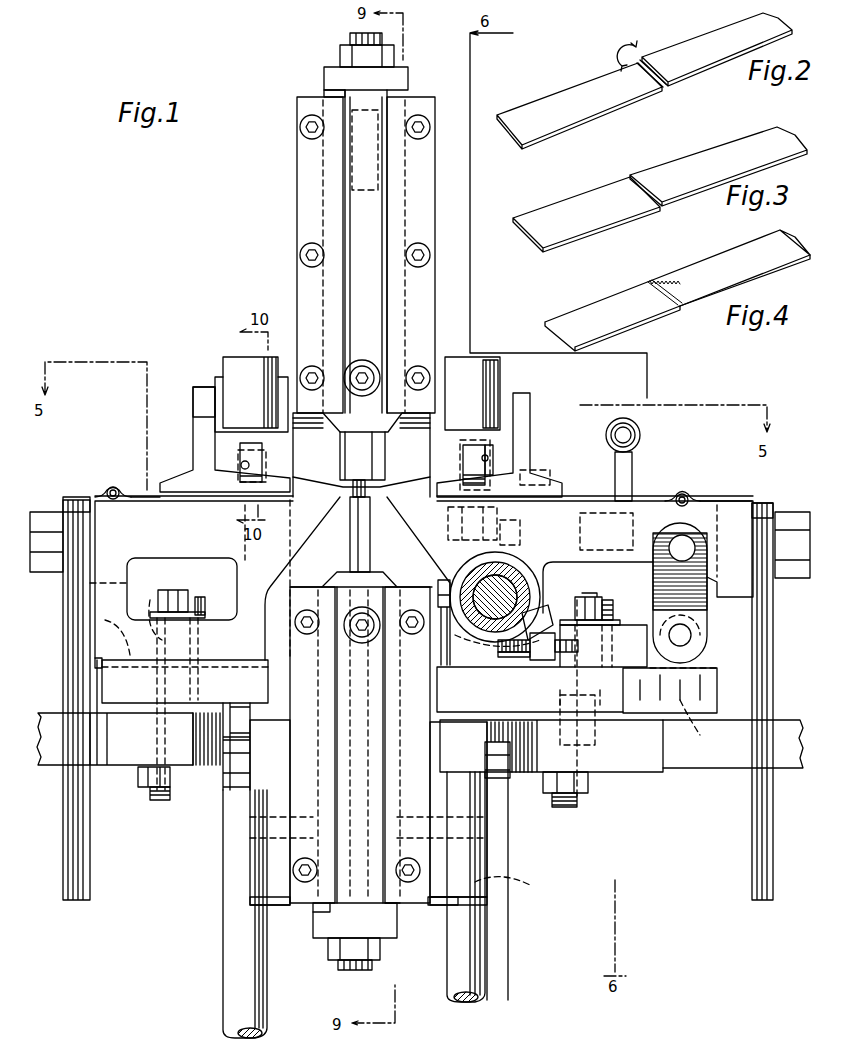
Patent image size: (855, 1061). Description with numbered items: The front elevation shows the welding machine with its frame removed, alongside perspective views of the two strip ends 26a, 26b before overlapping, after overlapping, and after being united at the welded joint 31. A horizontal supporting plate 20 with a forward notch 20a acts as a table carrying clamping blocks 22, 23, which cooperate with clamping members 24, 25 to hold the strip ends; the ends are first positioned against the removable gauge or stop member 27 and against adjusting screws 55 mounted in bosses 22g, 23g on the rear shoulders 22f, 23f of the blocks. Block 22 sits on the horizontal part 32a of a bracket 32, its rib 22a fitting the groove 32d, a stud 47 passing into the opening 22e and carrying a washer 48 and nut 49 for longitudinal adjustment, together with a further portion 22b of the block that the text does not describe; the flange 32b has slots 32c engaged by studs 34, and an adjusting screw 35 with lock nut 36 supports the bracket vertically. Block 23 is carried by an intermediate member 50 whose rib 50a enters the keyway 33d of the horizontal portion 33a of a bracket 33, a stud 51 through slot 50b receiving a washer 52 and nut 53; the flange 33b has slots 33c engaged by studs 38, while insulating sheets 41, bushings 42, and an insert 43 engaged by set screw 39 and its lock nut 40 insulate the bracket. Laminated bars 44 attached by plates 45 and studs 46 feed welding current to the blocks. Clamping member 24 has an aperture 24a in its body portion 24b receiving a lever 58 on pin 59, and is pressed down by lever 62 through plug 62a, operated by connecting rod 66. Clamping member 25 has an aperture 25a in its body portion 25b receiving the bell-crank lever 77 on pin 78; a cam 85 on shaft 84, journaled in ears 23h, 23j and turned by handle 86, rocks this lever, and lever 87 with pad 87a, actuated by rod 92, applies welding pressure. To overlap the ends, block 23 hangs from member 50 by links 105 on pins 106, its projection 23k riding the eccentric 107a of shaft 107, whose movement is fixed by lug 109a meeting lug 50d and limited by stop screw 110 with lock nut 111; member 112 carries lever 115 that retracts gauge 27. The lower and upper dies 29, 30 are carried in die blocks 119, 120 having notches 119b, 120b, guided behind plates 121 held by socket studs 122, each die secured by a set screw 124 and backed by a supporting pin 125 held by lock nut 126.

In FIG. 1, the horizontal supporting plate 20 is at (668, 775).
In FIG. 1, the notch 20a is at (560, 808).
In FIG. 1, the clamping block 22 is at (191, 577).
In FIG. 1, the projection or rib 22a is at (97, 663).
In FIG. 1, the plate bore 22b is at (164, 686).
In FIG. 1, the opening 22e is at (182, 589).
In FIG. 1, the shoulder 22f is at (138, 494).
In FIG. 1, the bosses 22g is at (116, 488).
In FIG. 1, the clamping block 23 is at (573, 507).
In FIG. 1, the shoulder 23f is at (708, 499).
In FIG. 1, the bosses 23g is at (690, 494).
In FIG. 1, the ears 23h is at (573, 452).
In FIG. 1, the ear 23j is at (572, 508).
In FIG. 1, the downwardly extending projection 23k is at (598, 587).
In FIG. 1, the clamping member 24 is at (190, 486).
In FIG. 1, the rectangular aperture 24a is at (245, 460).
In FIG. 1, the body portion 24b is at (205, 420).
In FIG. 1, the clamping member 25 is at (542, 487).
In FIG. 1, the rectangular aperture 25a is at (493, 458).
In FIG. 1, the body portion 25b is at (485, 458).
In FIG. 2, the strip end 26a is at (582, 100).
In FIG. 3, the strip end 26a is at (604, 192).
In FIG. 4, the strip end 26a is at (612, 302).
In FIG. 2, the strip end 26b is at (695, 42).
In FIG. 3, the strip end 26b is at (690, 166).
In FIG. 4, the strip end 26b is at (706, 268).
In FIG. 1, the gauge or stop member 27 is at (352, 498).
In FIG. 1, the lower welding die 29 is at (350, 562).
In FIG. 1, the upper welding die 30 is at (342, 440).
In FIG. 4, the welded joint 31 is at (658, 277).
In FIG. 1, the bracket 32 is at (227, 695).
In FIG. 1, the horizontal portion 32a is at (112, 684).
In FIG. 1, the flange 32b is at (262, 905).
In FIG. 1, the elongated slots 32c is at (255, 880).
In FIG. 1, the groove 32d is at (100, 630).
In FIG. 1, the bracket 33 is at (705, 775).
In FIG. 1, the horizontal portion 33a is at (717, 690).
In FIG. 1, the flange 33b is at (488, 905).
In FIG. 1, the elongated slots 33c is at (490, 893).
In FIG. 1, the groove or keyway 33d is at (701, 726).
In FIG. 1, the studs 34 is at (227, 777).
In FIG. 1, the adjusting screw 35 is at (156, 800).
In FIG. 1, the lock nut 36 is at (140, 787).
In FIG. 1, the studs 38 is at (497, 788).
In FIG. 1, the set screw 39 is at (577, 804).
In FIG. 1, the lock nut 40 is at (585, 782).
In FIG. 1, the sheets of insulating material 41 is at (412, 908).
In FIG. 1, the insulating bushings 42 is at (509, 884).
In FIG. 1, the insert 43 is at (600, 735).
In FIG. 1, the laminated bars 44 is at (72, 902).
In FIG. 1, the plates 45 is at (75, 497).
In FIG. 1, the studs 46 is at (42, 512).
In FIG. 1, the bolt or stud 47 is at (172, 590).
In FIG. 1, the washer 48 is at (205, 608).
In FIG. 1, the nut 49 is at (192, 612).
In FIG. 1, the intermediate member 50 is at (625, 640).
In FIG. 1, the rib or projection 50a is at (710, 668).
In FIG. 1, the elongated slot 50b is at (611, 692).
In FIG. 1, the lug 50d is at (542, 662).
In FIG. 1, the bolt or stud 51 is at (643, 580).
In FIG. 1, the washer 52 is at (565, 620).
In FIG. 1, the nut 53 is at (612, 598).
In FIG. 1, the adjusting screws 55 is at (107, 492).
In FIG. 1, the lever 58 is at (250, 462).
In FIG. 1, the pin 59 is at (240, 470).
In FIG. 1, the lever 62 is at (232, 368).
In FIG. 1, the plug 62a is at (242, 416).
In FIG. 1, the connecting rod 66 is at (225, 1010).
In FIG. 1, the operating lever 77 is at (497, 440).
In FIG. 1, the pin 78 is at (527, 450).
In FIG. 1, the shaft 84 is at (518, 522).
In FIG. 1, the cam 85 is at (513, 510).
In FIG. 1, the operating handle 86 is at (641, 430).
In FIG. 1, the lever 87 is at (472, 368).
In FIG. 1, the pad 87a is at (492, 400).
In FIG. 1, the rod 92 is at (488, 995).
In FIG. 1, the links 105 is at (700, 600).
In FIG. 1, the pins 106 is at (682, 548).
In FIG. 1, the shaft 107 is at (470, 623).
In FIG. 1, the eccentric 107a is at (457, 643).
In FIG. 1, the lug 109a is at (515, 657).
In FIG. 1, the stop screw 110 is at (505, 652).
In FIG. 1, the lock nut 111 is at (565, 654).
In FIG. 1, the lever-carrying member 112 is at (355, 765).
In FIG. 1, the lever 115 is at (444, 583).
In FIG. 1, the lower die block 119 is at (322, 912).
In FIG. 1, the rectangular notches 119b is at (318, 910).
In FIG. 1, the upper die block 120 is at (335, 70).
In FIG. 1, the rectangular notches 120b is at (328, 92).
In FIG. 1, the plates 121 is at (300, 108).
In FIG. 1, the socket studs 122 is at (300, 127).
In FIG. 1, the socket set screw 124 is at (366, 376).
In FIG. 1, the supporting pins 125 is at (352, 36).
In FIG. 1, the lock nut 126 is at (394, 55).